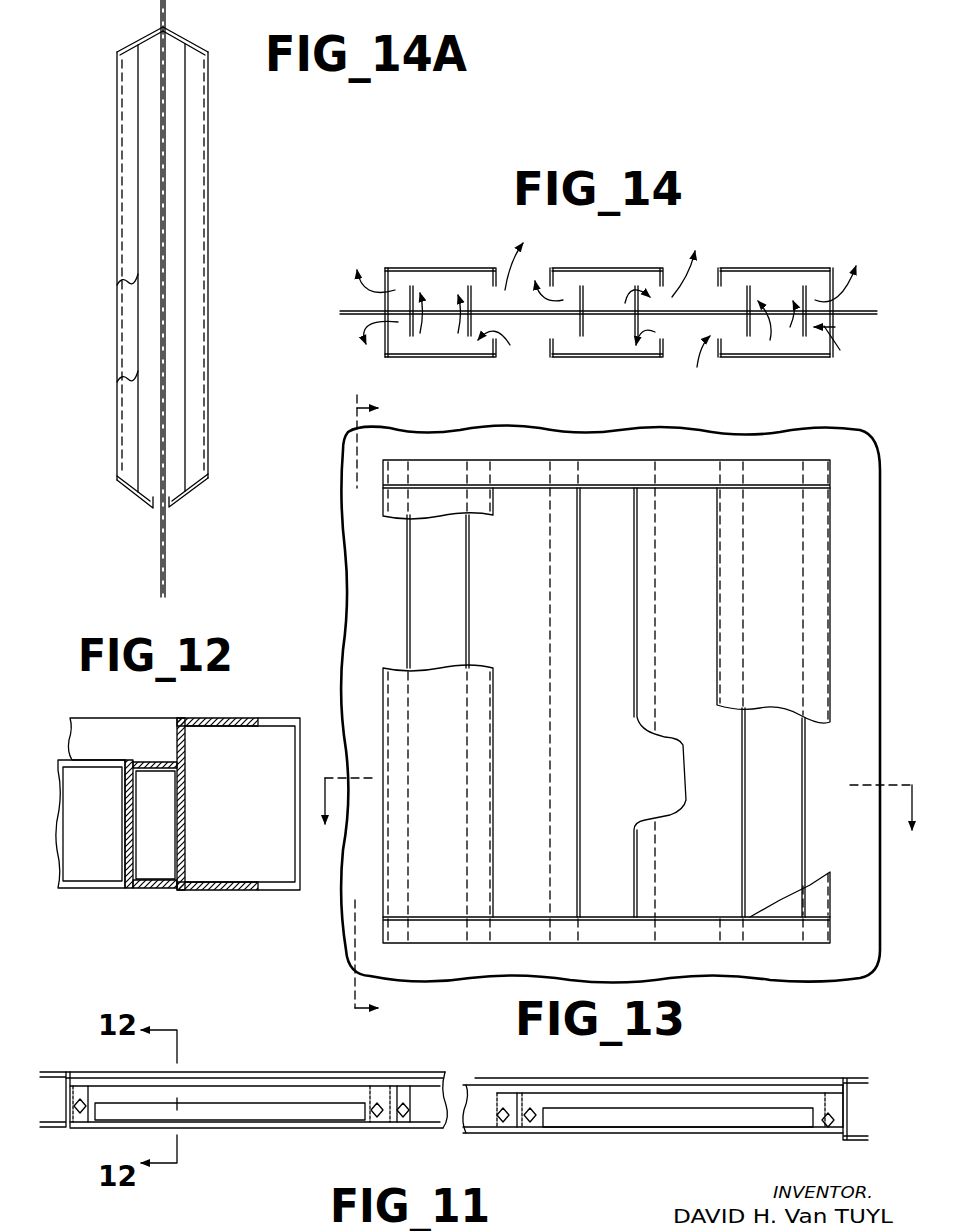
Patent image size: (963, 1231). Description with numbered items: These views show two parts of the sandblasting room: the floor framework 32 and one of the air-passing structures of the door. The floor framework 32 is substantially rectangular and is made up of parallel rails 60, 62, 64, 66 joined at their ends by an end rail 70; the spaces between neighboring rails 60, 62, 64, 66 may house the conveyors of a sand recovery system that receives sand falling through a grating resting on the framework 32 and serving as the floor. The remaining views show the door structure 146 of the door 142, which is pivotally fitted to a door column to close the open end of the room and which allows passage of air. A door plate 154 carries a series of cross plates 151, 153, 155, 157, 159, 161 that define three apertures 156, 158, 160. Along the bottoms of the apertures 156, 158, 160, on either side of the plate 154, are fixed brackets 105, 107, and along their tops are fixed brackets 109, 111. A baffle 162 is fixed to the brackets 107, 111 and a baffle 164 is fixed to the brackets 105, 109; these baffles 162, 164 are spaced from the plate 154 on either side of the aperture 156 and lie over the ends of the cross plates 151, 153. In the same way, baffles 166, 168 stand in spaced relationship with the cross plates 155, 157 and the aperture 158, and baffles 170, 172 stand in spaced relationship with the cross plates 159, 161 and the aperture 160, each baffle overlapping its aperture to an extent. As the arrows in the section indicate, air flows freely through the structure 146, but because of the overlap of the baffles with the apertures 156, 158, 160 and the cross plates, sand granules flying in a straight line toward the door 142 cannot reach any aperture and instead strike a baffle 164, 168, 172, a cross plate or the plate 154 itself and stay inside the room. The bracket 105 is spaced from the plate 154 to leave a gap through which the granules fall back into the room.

In FIG. 12, the floor framework 32 is at (213, 716).
In FIG. 11, the floor framework 32 is at (74, 1130).
In FIG. 11, the rail 60 is at (858, 1080).
In FIG. 11, the rail 62 is at (520, 1133).
In FIG. 11, the rail 64 is at (392, 1128).
In FIG. 12, the rail 66 is at (106, 890).
In FIG. 11, the rail 66 is at (53, 1070).
In FIG. 12, the rail 70 is at (249, 718).
In FIG. 11, the rail 70 is at (296, 1128).
In FIG. 14A, the bracket 105 is at (130, 494).
In FIG. 14A, the bracket 107 is at (186, 494).
In FIG. 13, the bracket 107 is at (691, 944).
In FIG. 14A, the bracket 109 is at (140, 40).
In FIG. 14A, the bracket 111 is at (195, 38).
In FIG. 13, the bracket 111 is at (681, 473).
In FIG. 13, the door 142 is at (882, 629).
In FIG. 14A, the door structure 146 is at (214, 196).
In FIG. 14, the door structure 146 is at (384, 357).
In FIG. 13, the door structure 146 is at (385, 572).
In FIG. 14A, the cross plate 151 is at (152, 322).
In FIG. 14, the cross plate 151 is at (410, 287).
In FIG. 14, the cross plate 153 is at (468, 297).
In FIG. 14A, the door plate 154 is at (159, 556).
In FIG. 14, the door plate 154 is at (348, 314).
In FIG. 13, the door plate 154 is at (350, 515).
In FIG. 14, the cross plate 155 is at (580, 287).
In FIG. 14, the aperture 156 is at (462, 311).
In FIG. 13, the aperture 156 is at (466, 616).
In FIG. 14, the cross plate 157 is at (638, 290).
In FIG. 14, the aperture 158 is at (596, 318).
In FIG. 13, the aperture 158 is at (580, 637).
In FIG. 14, the cross plate 159 is at (748, 288).
In FIG. 14, the aperture 160 is at (767, 318).
In FIG. 13, the aperture 160 is at (746, 843).
In FIG. 14, the cross plate 161 is at (813, 298).
In FIG. 14A, the baffle 162 is at (116, 236).
In FIG. 14, the baffle 162 is at (439, 268).
In FIG. 13, the baffle 162 is at (457, 600).
In FIG. 14A, the baffle 164 is at (208, 252).
In FIG. 14, the baffle 164 is at (455, 358).
In FIG. 13, the baffle 164 is at (481, 667).
In FIG. 14, the baffle 166 is at (593, 268).
In FIG. 13, the baffle 166 is at (621, 807).
In FIG. 14, the baffle 168 is at (630, 360).
In FIG. 14, the baffle 170 is at (776, 270).
In FIG. 13, the baffle 170 is at (789, 785).
In FIG. 14, the baffle 172 is at (787, 360).
In FIG. 13, the baffle 172 is at (789, 607).